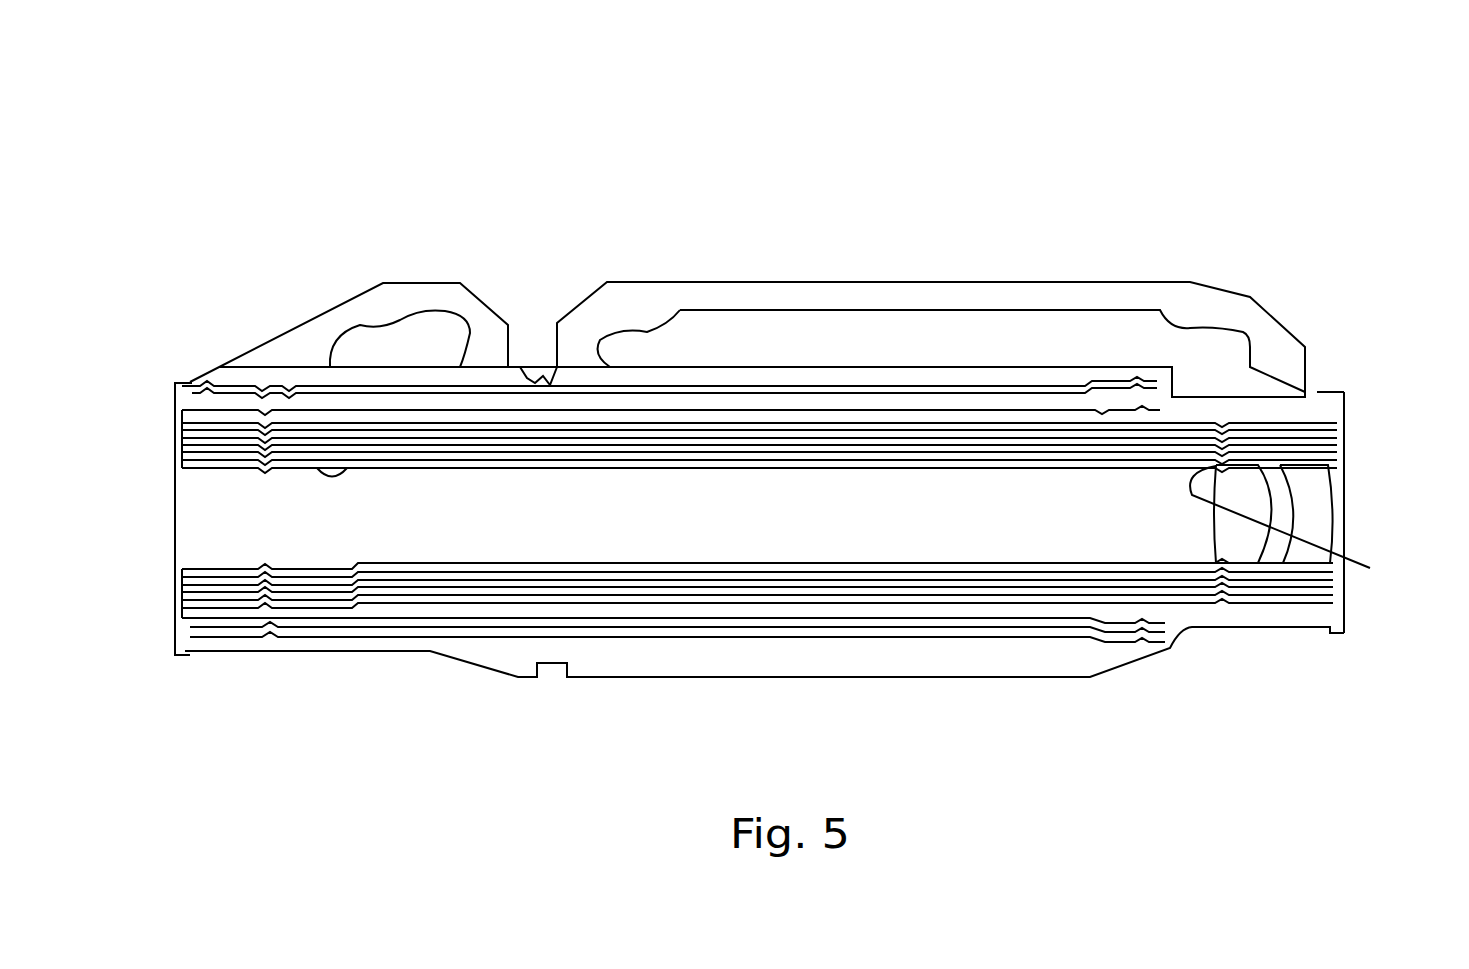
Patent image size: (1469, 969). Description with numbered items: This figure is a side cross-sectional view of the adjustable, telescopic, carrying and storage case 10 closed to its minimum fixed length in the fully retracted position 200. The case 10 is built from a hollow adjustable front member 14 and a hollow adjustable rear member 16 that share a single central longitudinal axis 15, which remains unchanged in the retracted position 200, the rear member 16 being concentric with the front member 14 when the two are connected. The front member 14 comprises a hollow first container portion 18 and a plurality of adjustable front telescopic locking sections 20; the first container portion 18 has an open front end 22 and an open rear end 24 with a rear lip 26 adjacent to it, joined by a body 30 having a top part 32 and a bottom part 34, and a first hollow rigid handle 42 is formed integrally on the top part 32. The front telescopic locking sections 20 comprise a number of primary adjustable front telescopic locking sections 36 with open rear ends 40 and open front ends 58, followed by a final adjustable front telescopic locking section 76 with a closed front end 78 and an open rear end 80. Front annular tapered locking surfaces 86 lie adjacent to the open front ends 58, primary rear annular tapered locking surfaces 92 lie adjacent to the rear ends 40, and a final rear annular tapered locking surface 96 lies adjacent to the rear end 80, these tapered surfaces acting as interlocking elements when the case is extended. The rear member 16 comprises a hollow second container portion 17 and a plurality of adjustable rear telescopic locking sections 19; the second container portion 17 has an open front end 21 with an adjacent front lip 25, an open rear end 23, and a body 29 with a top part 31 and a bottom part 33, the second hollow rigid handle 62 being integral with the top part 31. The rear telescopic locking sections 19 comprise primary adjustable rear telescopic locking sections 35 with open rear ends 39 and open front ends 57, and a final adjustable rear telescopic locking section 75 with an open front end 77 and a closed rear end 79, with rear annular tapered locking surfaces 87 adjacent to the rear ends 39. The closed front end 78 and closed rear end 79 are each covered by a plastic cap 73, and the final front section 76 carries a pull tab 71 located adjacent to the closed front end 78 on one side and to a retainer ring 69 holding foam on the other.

The retracted position 200 is at (648, 118).
The adjustable, telescopic, carrying and storage case 10 is at (645, 754).
The adjustable front member 14 is at (1340, 468).
The central longitudinal axis 15 is at (160, 507).
The adjustable rear member 16 is at (215, 395).
The second container portion 17 is at (375, 652).
The first container portion 18 is at (713, 678).
The adjustable rear telescopic locking sections 19 is at (838, 386).
The adjustable front telescopic locking sections 20 is at (974, 563).
The open front end 21 is at (518, 677).
The open front end 22 is at (1350, 627).
The open rear end 23 is at (176, 653).
The open rear end 24 is at (539, 677).
The front lip 25 is at (537, 372).
The rear lip 26 is at (569, 672).
The body 29 is at (218, 650).
The body 30 is at (848, 678).
The top part 31 is at (378, 367).
The top part 32 is at (945, 367).
The bottom part 33 is at (276, 652).
The bottom part 34 is at (1015, 678).
The primary adjustable rear telescopic locking sections 35 is at (885, 386).
The primary adjustable front telescopic locking sections 36 is at (182, 618).
The open rear ends 39 is at (176, 404).
The open rear ends 40 is at (182, 468).
The first hollow rigid handle 42 is at (818, 283).
The open front ends 57 is at (1155, 380).
The open front ends 58 is at (1313, 600).
The second hollow rigid handle 62 is at (420, 283).
The retainer ring 69 is at (1298, 527).
The pull tab 71 is at (1310, 527).
The caps 73 is at (178, 393).
The final adjustable rear telescopic locking section 75 is at (176, 540).
The final adjustable front telescopic locking section 76 is at (182, 566).
The open front end 77 is at (1160, 410).
The closed front end 78 is at (1215, 490).
The closed rear end 79 is at (178, 471).
The open rear end 80 is at (182, 468).
The front annular tapered locking surfaces 86 is at (1337, 468).
The rear annular tapered locking surfaces 87 is at (238, 388).
The primary rear annular tapered locking surfaces 92 is at (353, 468).
The final rear annular tapered locking surface 96 is at (307, 460).